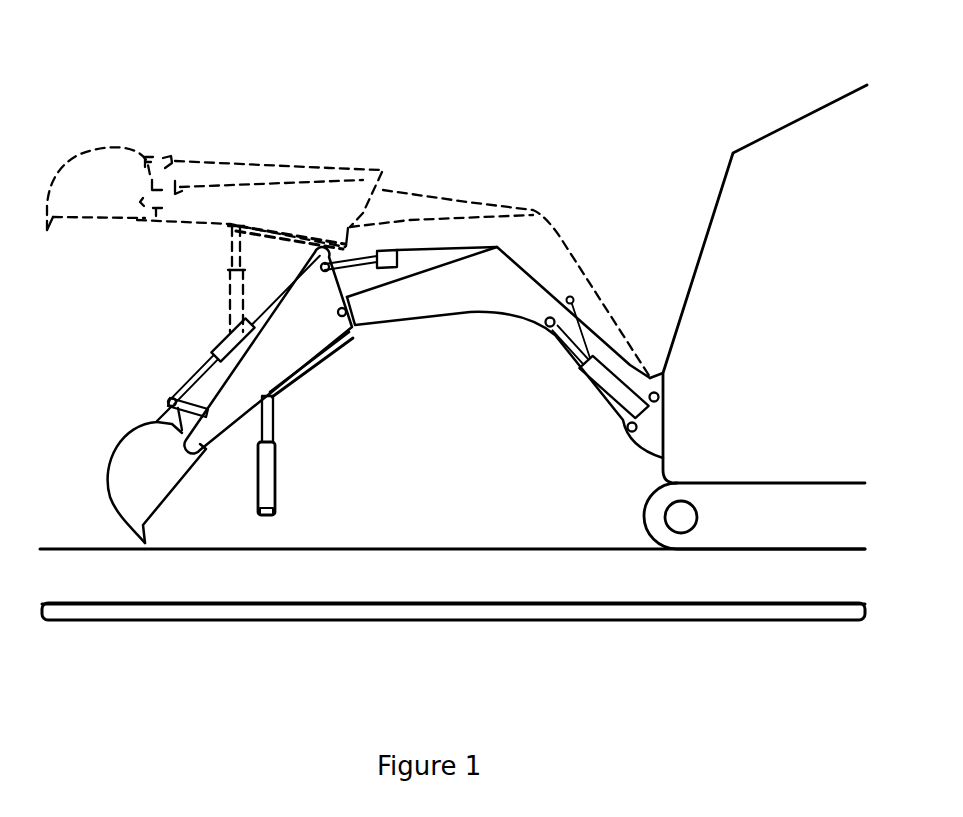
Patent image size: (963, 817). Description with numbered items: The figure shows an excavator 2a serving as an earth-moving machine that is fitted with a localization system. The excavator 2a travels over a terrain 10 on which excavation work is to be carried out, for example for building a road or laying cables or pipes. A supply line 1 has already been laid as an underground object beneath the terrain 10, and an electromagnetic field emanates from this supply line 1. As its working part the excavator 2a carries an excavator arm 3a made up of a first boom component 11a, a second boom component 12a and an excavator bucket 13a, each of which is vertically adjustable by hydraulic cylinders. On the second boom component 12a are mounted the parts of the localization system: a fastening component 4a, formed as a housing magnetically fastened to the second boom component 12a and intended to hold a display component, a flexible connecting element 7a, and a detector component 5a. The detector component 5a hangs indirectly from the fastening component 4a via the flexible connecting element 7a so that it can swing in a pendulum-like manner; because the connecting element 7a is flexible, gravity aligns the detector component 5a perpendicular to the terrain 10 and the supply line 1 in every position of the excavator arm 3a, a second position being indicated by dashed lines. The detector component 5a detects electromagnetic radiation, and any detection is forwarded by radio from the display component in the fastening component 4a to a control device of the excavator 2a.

The supply line 1 is at (187, 615).
The terrain 10 is at (72, 543).
The excavator 2a is at (560, 110).
The excavator arm 3a is at (355, 301).
The first boom component 11a is at (417, 297).
The second boom component 12a is at (285, 335).
The excavator bucket 13a is at (123, 468).
The fastening component 4a is at (317, 368).
The detector component 5a is at (270, 482).
The flexible connecting element 7a is at (275, 430).